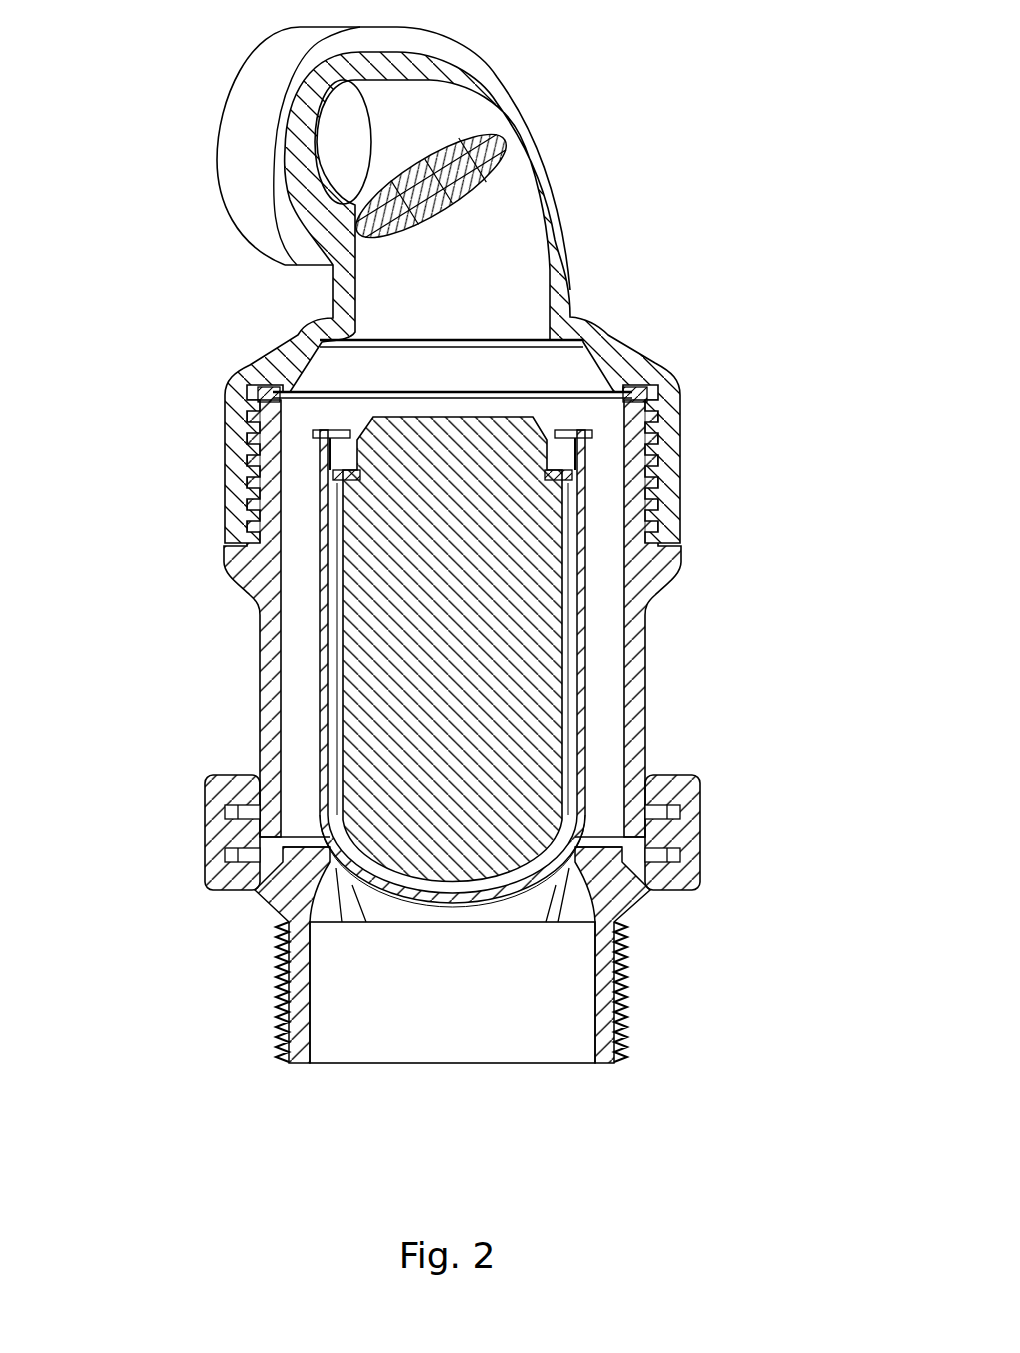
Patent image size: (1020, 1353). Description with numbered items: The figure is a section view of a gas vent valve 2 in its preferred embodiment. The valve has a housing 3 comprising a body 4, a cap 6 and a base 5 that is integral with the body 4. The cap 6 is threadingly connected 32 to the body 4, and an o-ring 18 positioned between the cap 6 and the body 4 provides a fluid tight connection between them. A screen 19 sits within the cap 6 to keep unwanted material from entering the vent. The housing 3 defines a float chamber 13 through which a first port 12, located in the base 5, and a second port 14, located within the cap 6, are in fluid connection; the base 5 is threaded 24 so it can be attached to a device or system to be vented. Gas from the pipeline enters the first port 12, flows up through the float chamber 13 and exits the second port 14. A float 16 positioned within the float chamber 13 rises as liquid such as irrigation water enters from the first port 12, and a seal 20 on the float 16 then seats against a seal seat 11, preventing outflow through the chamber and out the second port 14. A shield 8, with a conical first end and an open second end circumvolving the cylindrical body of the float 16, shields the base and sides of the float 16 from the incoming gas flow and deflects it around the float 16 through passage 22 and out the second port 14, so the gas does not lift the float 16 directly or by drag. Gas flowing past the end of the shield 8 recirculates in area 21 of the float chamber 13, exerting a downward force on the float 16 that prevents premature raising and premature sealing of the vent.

The gas vent valve 2 is at (705, 262).
The housing 3 is at (758, 550).
The body 4 is at (647, 692).
The base 5 is at (641, 896).
The cap 6 is at (560, 193).
The shield 8 is at (328, 730).
The seal seat 11 is at (563, 337).
The first port 12 is at (452, 1012).
The float chamber 13 is at (603, 570).
The second port 14 is at (340, 145).
The float 16 is at (340, 643).
The o-ring 18 is at (257, 393).
The screen 19 is at (480, 160).
The seal 20 is at (340, 475).
The area 21 is at (557, 410).
The passage 22 is at (605, 757).
The thread 24 is at (626, 1018).
The threaded connection 32 is at (657, 471).